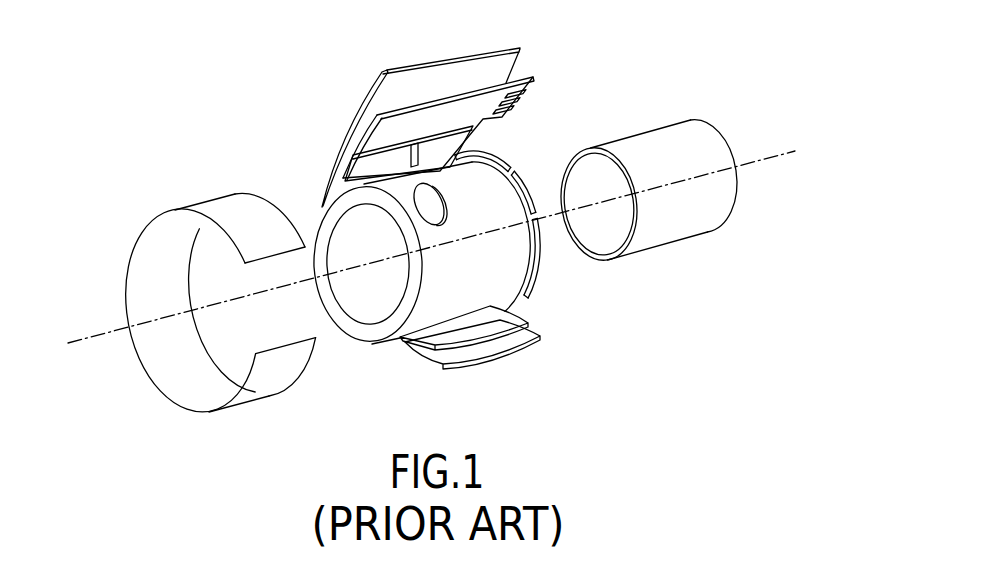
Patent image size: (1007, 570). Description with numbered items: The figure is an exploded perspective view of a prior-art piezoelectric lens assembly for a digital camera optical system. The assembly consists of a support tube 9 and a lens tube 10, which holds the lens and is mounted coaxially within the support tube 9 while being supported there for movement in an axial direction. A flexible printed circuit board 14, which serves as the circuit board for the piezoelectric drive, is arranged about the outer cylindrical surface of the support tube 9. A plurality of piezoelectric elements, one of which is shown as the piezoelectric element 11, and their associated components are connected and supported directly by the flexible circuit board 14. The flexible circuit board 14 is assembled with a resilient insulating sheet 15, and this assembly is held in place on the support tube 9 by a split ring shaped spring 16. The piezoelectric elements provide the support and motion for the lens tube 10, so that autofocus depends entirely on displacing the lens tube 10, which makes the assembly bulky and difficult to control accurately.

The support tube 9 is at (517, 282).
The lens tube 10 is at (662, 137).
The piezoelectric element 11 is at (457, 137).
The flexible printed circuit board 14 is at (521, 77).
The resilient insulating sheet 15 is at (492, 50).
The split ring shaped spring 16 is at (220, 207).